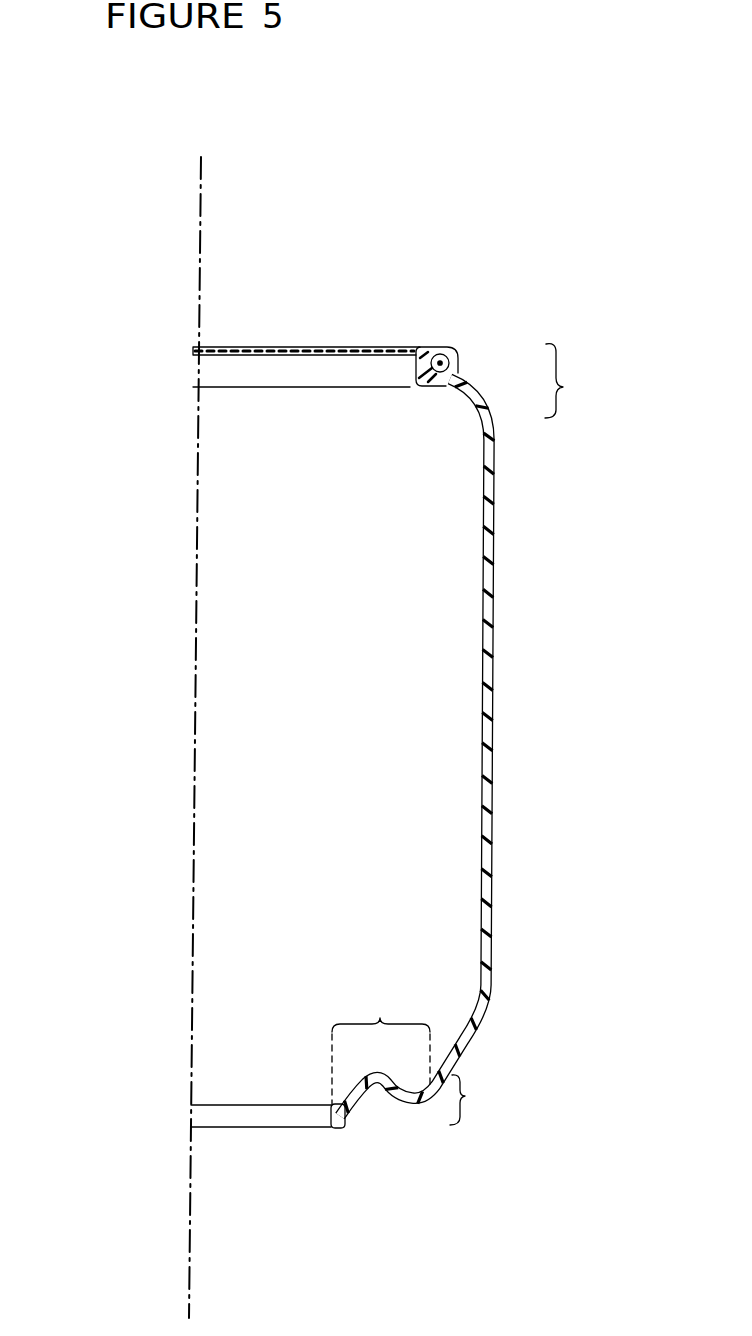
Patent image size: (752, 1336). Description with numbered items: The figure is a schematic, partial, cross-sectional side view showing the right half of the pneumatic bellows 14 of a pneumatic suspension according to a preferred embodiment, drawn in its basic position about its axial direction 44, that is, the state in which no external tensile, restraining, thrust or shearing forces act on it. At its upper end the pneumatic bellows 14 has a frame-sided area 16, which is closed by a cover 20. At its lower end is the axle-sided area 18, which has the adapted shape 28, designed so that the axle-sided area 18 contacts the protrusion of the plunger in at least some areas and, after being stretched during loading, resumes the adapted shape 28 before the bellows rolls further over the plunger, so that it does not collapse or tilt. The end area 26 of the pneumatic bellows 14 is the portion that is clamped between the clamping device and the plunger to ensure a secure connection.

The pneumatic bellows 14 is at (485, 776).
The frame-sided area 16 is at (570, 381).
The axle-sided area 18 is at (471, 1100).
The cover 20 is at (437, 349).
The end area 26 is at (340, 1128).
The adapted shape 28 is at (381, 1051).
The axial direction 44 is at (200, 303).